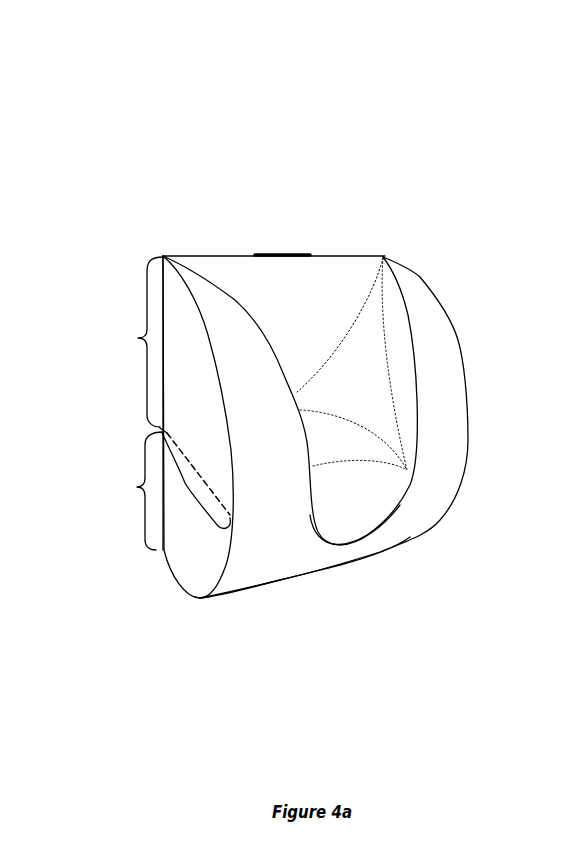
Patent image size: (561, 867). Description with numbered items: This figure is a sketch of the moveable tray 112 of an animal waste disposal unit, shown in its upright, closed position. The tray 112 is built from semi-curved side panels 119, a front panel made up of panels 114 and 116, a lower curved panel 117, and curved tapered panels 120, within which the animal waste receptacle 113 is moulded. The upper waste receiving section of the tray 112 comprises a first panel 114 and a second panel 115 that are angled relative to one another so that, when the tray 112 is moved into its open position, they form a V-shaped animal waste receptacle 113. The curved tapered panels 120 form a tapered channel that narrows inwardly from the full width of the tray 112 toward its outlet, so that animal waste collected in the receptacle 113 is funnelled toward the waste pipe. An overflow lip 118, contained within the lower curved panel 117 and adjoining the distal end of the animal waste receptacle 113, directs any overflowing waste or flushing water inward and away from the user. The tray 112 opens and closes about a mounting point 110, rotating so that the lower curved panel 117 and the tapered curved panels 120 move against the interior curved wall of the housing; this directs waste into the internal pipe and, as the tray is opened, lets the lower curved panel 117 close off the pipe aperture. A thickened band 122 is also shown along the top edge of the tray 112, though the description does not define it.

The mounting point 110 is at (163, 431).
The moveable tray 112 is at (291, 356).
The animal waste receptacle 113 is at (366, 349).
The first panel 114 is at (138, 338).
The second panel 115 is at (184, 484).
The front panel section 116 is at (137, 487).
The lower curved panel 117 is at (262, 563).
The overflow lip 118 is at (367, 497).
The semi-curved side panels 119 is at (188, 368).
The curved tapered panels 120 is at (232, 377).
The top band 122 is at (272, 254).